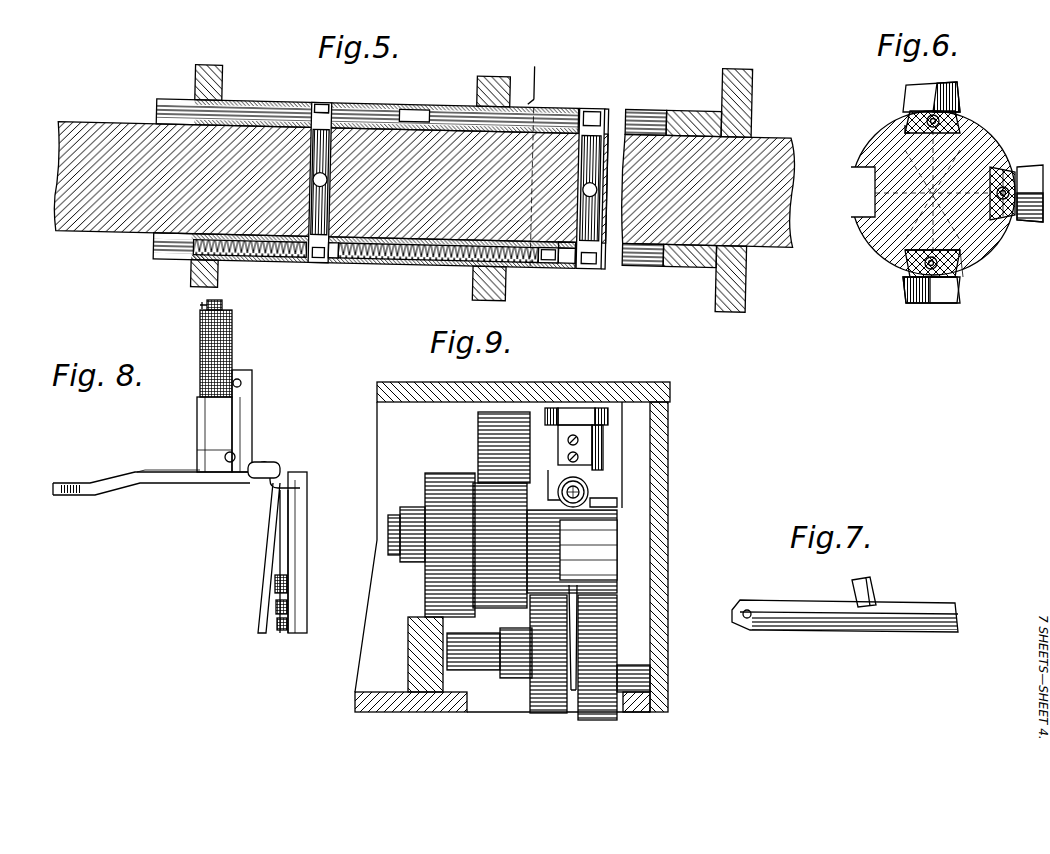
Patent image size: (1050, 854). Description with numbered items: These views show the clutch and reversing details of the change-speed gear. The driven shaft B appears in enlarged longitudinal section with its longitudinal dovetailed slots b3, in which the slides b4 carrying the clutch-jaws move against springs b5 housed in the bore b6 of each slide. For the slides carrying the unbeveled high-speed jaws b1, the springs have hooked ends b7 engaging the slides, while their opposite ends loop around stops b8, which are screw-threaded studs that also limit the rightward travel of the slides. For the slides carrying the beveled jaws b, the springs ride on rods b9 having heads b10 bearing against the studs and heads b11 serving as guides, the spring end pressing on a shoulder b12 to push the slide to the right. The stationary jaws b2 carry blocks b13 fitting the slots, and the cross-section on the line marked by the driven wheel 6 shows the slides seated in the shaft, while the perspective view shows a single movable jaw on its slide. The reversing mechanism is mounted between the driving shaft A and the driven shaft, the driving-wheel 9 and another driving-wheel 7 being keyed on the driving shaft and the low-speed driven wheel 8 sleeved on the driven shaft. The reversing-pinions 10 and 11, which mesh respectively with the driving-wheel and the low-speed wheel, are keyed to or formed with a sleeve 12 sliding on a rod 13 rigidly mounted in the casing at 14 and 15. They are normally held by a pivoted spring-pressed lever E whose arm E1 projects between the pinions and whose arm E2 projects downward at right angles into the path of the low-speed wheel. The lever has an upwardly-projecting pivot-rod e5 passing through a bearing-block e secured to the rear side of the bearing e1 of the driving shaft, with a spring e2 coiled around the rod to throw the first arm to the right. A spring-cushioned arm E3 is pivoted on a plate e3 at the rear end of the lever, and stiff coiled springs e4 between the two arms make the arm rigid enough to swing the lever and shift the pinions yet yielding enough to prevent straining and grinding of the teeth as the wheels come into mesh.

In FIG. 5, the driven shaft B is at (790, 200).
In FIG. 6, the driven shaft B is at (870, 252).
In FIG. 9, the driven shaft B is at (392, 540).
In FIG. 5, the clutch-jaws b is at (535, 262).
In FIG. 6, the clutch-jaws b is at (945, 90).
In FIG. 7, the clutch-jaws b is at (874, 584).
In FIG. 5, the clutch-jaws b1 is at (221, 80).
In FIG. 6, the clutch-jaws b1 is at (940, 303).
In FIG. 5, the clutch-jaws b2 is at (720, 88).
In FIG. 5, the dovetailed slots b3 is at (642, 261).
In FIG. 6, the dovetailed slots b3 is at (955, 125).
In FIG. 5, the slides b4 is at (272, 104).
In FIG. 6, the slides b4 is at (958, 270).
In FIG. 7, the slides b4 is at (810, 590).
In FIG. 5, the springs b5 is at (200, 262).
In FIG. 6, the springs b5 is at (910, 115).
In FIG. 5, the bore b6 is at (405, 105).
In FIG. 6, the bore b6 is at (950, 105).
In FIG. 7, the bore b6 is at (740, 606).
In FIG. 5, the hooked ends b7 is at (196, 266).
In FIG. 5, the stops b8 is at (592, 274).
In FIG. 5, the rods b9 is at (549, 262).
In FIG. 6, the rods b9 is at (905, 125).
In FIG. 5, the heads b10 is at (336, 262).
In FIG. 5, the heads b11 is at (568, 262).
In FIG. 5, the shoulder b12 is at (556, 258).
In FIG. 5, the blocks b13 is at (682, 104).
In FIG. 5, the driven wheel 6 is at (531, 156).
In FIG. 8, the bearing-block e is at (198, 427).
In FIG. 9, the bearing-block e is at (600, 508).
In FIG. 9, the bearing e1 is at (600, 530).
In FIG. 8, the spring e2 is at (233, 348).
In FIG. 8, the plate e3 is at (262, 465).
In FIG. 9, the plate e3 is at (600, 450).
In FIG. 8, the coiled springs e4 is at (272, 635).
In FIG. 8, the pivot-rod e5 is at (223, 305).
In FIG. 9, the pivot-rod e5 is at (590, 492).
In FIG. 8, the lever E is at (228, 484).
In FIG. 9, the lever E is at (580, 480).
In FIG. 8, the arm E1 is at (178, 483).
In FIG. 9, the arm E1 is at (612, 610).
In FIG. 8, the arm E2 is at (308, 540).
In FIG. 9, the arm E2 is at (604, 432).
In FIG. 8, the spring-cushioned arm E3 is at (272, 548).
In FIG. 9, the spring-cushioned arm E3 is at (555, 408).
In FIG. 9, the driving shaft A is at (398, 508).
In FIG. 9, the driving-wheel 7 is at (440, 480).
In FIG. 9, the driven wheel 8 is at (480, 436).
In FIG. 9, the driving-wheel 9 is at (505, 505).
In FIG. 9, the reversing-pinion 10 is at (552, 715).
In FIG. 9, the reversing-pinion 11 is at (598, 720).
In FIG. 9, the sleeve 12 is at (515, 680).
In FIG. 9, the rod 13 is at (470, 672).
In FIG. 9, the mounting 14 is at (425, 672).
In FIG. 9, the mounting 15 is at (640, 690).